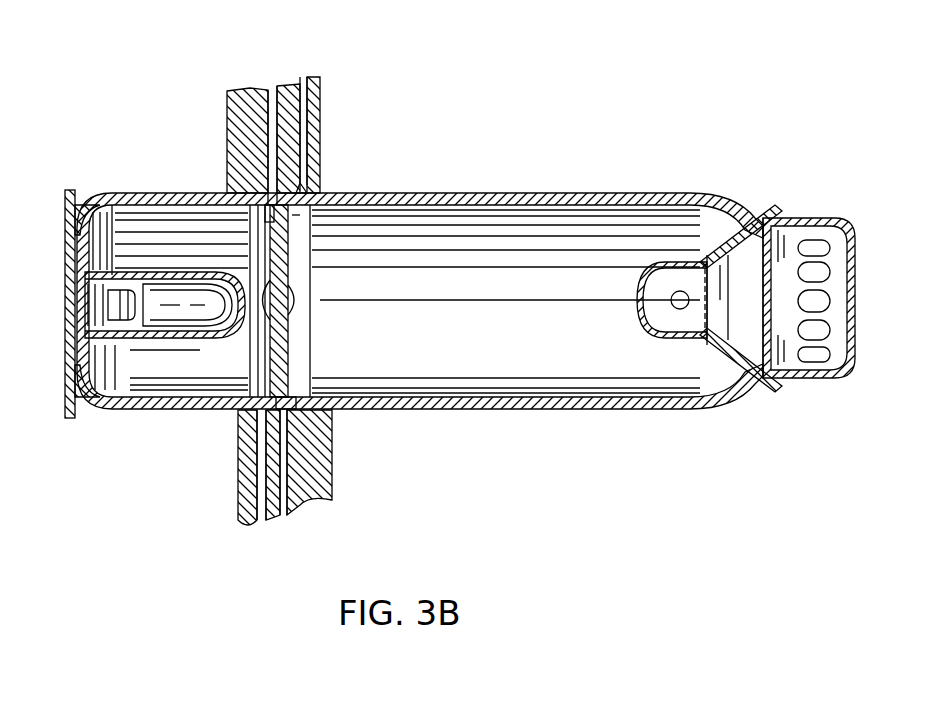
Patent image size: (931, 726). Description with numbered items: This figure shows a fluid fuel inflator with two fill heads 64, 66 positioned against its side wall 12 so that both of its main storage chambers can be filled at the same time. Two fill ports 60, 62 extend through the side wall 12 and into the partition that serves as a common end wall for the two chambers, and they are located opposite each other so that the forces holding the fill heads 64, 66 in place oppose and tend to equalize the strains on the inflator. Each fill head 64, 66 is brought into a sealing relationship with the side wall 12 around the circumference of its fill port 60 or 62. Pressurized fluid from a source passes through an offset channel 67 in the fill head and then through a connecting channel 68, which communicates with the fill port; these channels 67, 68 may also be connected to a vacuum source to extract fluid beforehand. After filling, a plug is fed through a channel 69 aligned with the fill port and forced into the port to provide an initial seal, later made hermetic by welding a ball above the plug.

The side wall 12 is at (521, 193).
The fill port 60 is at (310, 228).
The fill port 62 is at (290, 386).
The fill head 64 is at (240, 127).
The fill head 66 is at (325, 440).
The offset channel 67 is at (300, 121).
The connecting channel 68 is at (285, 192).
The channel 69 is at (272, 92).